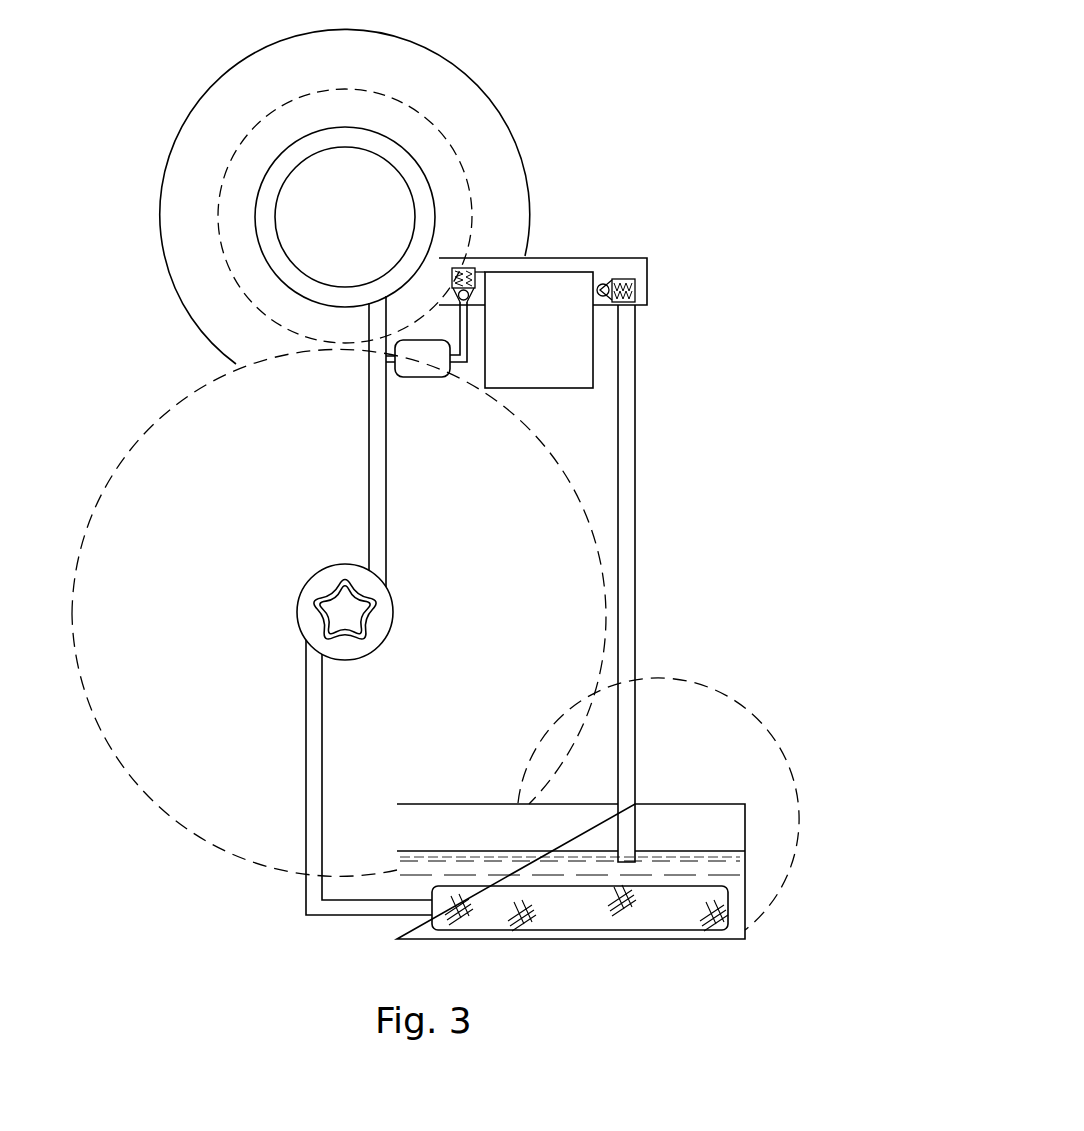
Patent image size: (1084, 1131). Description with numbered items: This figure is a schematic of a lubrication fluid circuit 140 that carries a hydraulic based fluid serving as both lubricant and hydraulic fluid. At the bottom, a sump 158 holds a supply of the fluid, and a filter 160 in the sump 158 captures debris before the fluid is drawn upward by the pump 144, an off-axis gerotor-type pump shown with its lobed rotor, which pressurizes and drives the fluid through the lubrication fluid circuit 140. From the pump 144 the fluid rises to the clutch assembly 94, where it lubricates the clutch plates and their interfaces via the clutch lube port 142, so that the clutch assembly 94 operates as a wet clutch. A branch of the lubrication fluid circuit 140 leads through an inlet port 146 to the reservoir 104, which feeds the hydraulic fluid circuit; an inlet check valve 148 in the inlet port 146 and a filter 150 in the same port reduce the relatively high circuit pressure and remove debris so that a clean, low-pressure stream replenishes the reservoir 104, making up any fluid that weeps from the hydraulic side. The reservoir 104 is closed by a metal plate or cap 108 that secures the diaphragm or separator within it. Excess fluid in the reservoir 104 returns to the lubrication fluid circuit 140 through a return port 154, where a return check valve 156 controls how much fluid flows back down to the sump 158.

The clutch assembly 94 is at (393, 153).
The reservoir 104 is at (560, 358).
The metal plate or cap 108 is at (561, 275).
The lubrication fluid circuit 140 is at (305, 823).
The clutch lube port 142 is at (380, 303).
The pump 144 is at (327, 577).
The inlet port 146 is at (470, 327).
The inlet check valve 148 is at (473, 258).
The filter 150 is at (441, 371).
The return port 154 is at (603, 283).
The return check valve 156 is at (632, 278).
The sump 158 is at (718, 827).
The filter 160 is at (678, 907).